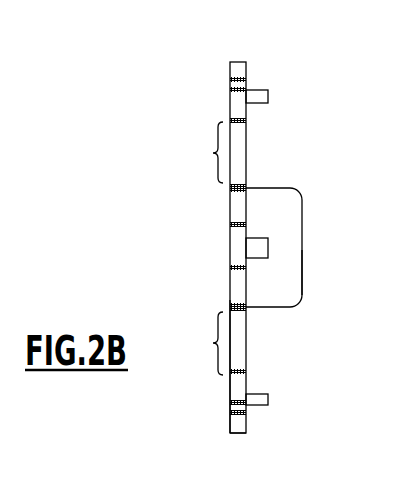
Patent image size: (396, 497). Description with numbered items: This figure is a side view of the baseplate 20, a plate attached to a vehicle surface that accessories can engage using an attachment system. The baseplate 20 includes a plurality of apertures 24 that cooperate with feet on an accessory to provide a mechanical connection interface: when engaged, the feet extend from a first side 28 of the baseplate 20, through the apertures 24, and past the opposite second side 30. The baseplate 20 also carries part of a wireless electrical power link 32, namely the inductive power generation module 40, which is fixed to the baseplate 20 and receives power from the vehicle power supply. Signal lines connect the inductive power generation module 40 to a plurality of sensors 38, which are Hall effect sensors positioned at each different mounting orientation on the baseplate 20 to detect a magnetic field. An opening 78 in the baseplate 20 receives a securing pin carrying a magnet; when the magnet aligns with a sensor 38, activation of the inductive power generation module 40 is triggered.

The baseplate 20 is at (238, 64).
The apertures 24 is at (203, 248).
The first side 28 is at (230, 424).
The second side 30 is at (246, 433).
The wireless electrical power link 32 is at (302, 180).
The sensors 38 is at (270, 97).
The inductive power generation module 40 is at (303, 288).
The opening 78 is at (247, 85).